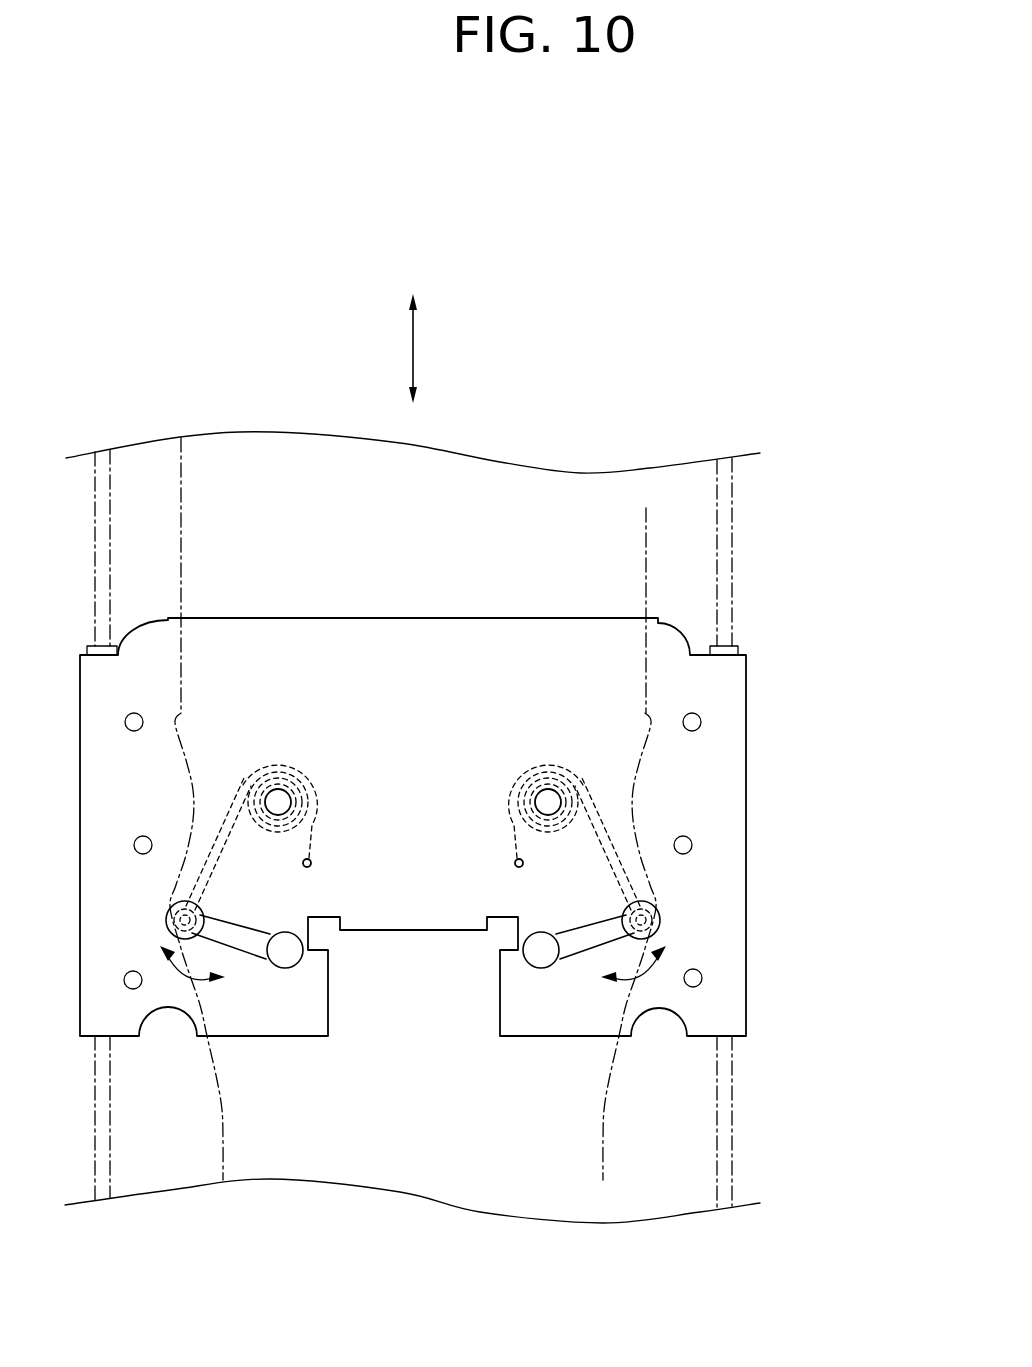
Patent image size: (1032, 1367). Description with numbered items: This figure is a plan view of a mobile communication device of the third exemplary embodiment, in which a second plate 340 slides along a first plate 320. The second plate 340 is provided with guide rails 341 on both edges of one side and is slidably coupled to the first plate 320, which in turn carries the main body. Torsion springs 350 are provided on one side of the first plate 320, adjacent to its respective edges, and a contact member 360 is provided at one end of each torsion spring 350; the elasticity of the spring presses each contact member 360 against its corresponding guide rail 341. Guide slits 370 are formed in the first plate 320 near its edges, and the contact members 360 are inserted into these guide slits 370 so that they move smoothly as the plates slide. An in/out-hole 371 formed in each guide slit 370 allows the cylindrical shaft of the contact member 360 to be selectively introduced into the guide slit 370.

The first plate 320 is at (708, 753).
The second plate 340 is at (675, 540).
The guide rail 341 is at (646, 508).
The torsion spring 350 is at (612, 808).
The contact member 360 is at (628, 938).
The guide slit 370 is at (572, 940).
The in/out-hole 371 is at (542, 957).